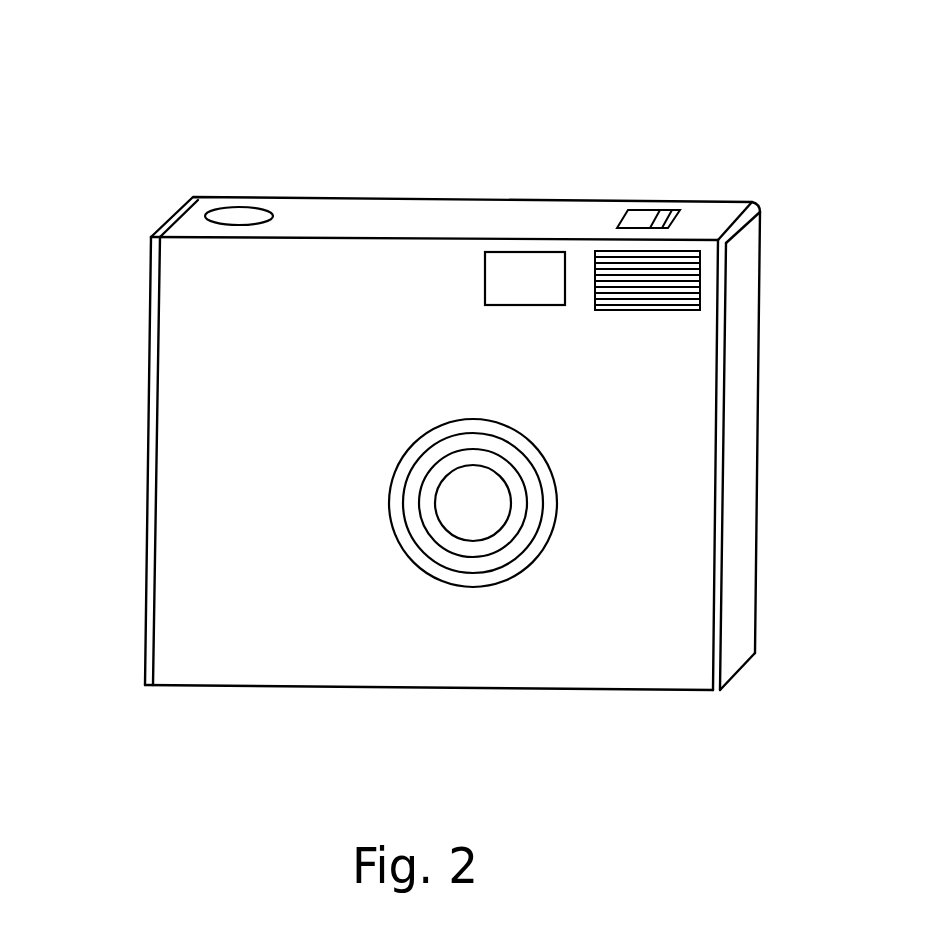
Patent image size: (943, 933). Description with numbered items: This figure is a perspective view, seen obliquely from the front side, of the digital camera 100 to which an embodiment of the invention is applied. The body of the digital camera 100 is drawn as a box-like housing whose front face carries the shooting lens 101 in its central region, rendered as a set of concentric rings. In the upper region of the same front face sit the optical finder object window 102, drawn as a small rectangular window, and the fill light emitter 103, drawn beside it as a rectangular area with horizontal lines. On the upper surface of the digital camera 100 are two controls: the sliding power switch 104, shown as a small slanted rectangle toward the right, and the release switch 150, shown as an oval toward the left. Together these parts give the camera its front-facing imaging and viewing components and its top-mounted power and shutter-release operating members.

The digital camera 100 is at (112, 115).
The shooting lens 101 is at (473, 503).
The optical finder object window 102 is at (517, 272).
The fill light emitter 103 is at (615, 268).
The sliding power switch 104 is at (643, 218).
The release switch 150 is at (233, 216).